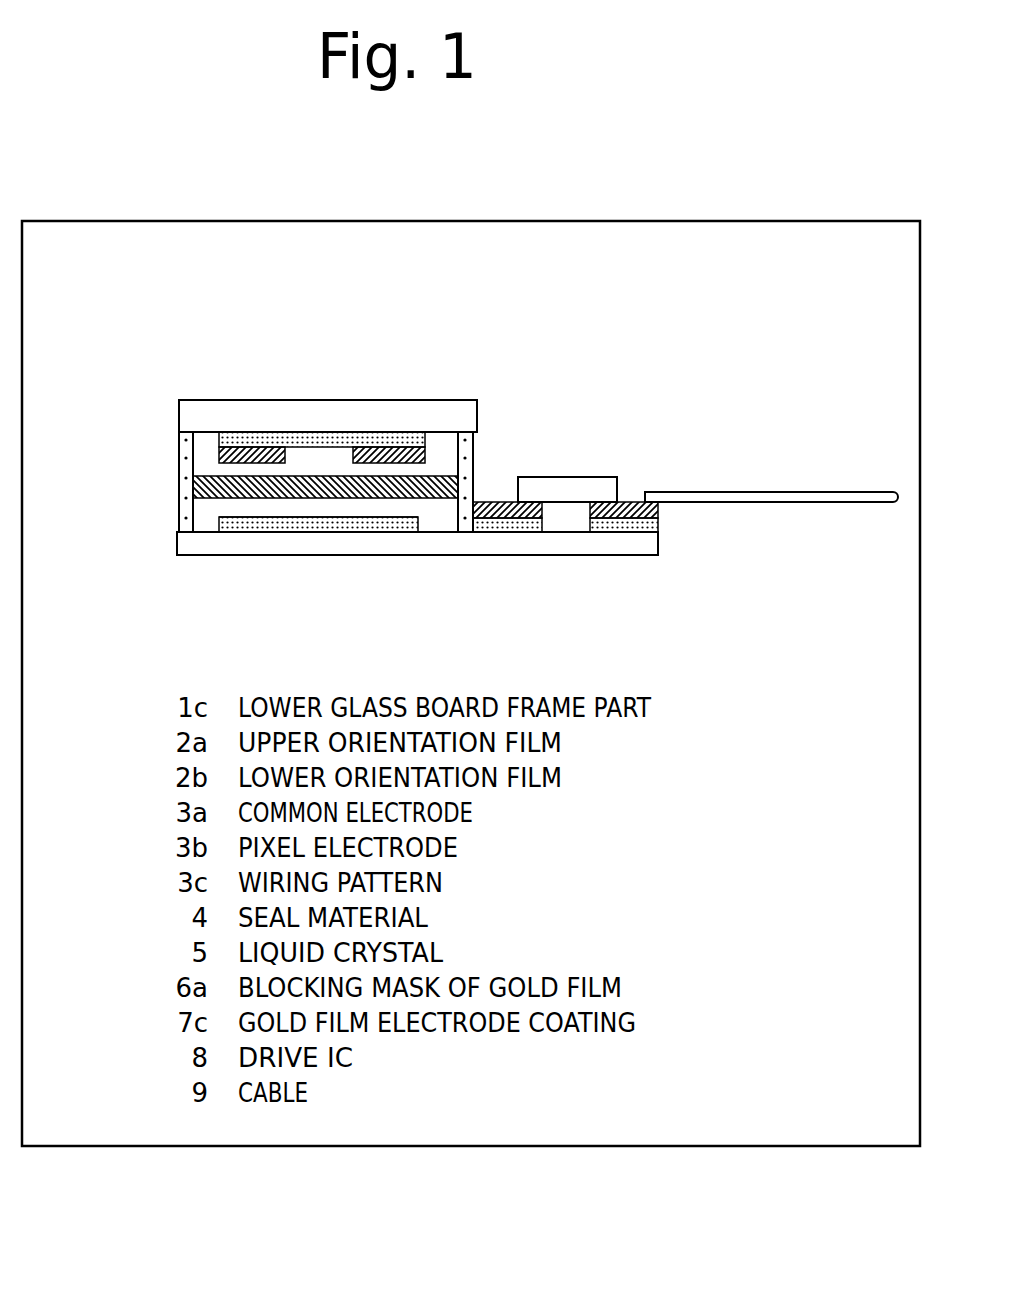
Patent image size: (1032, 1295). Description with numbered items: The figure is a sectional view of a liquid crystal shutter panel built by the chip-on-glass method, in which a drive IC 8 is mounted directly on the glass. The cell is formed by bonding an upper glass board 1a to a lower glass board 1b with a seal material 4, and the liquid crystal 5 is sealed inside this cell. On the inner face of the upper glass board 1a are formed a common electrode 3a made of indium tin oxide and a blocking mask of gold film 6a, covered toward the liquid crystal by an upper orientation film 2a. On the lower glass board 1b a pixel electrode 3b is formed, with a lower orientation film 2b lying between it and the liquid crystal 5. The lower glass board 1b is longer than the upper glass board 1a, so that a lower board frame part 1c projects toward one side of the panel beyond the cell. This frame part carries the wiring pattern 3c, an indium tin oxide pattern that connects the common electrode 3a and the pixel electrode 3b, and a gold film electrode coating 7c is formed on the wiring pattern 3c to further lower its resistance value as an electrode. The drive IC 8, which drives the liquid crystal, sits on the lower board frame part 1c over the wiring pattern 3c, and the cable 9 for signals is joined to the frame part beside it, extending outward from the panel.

The upper glass board 1a is at (228, 420).
The lower glass board 1b is at (228, 548).
The lower board frame part 1c is at (632, 348).
The upper orientation film 2a is at (208, 457).
The lower orientation film 2b is at (178, 517).
The common electrode 3a is at (277, 442).
The pixel electrode 3b is at (287, 522).
The wiring pattern 3c is at (490, 522).
The seal material 4 is at (178, 474).
The liquid crystal 5 is at (178, 488).
The blocking mask of gold film 6a is at (296, 448).
The gold film electrode coating 7c is at (633, 498).
The drive IC 8 is at (568, 477).
The cable 9 is at (780, 490).